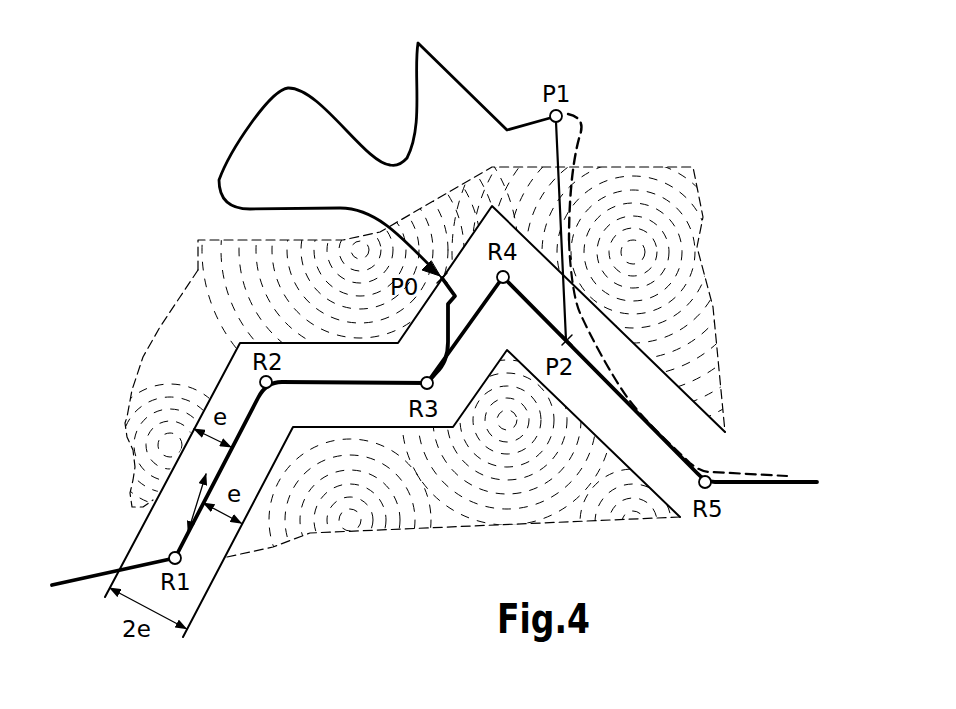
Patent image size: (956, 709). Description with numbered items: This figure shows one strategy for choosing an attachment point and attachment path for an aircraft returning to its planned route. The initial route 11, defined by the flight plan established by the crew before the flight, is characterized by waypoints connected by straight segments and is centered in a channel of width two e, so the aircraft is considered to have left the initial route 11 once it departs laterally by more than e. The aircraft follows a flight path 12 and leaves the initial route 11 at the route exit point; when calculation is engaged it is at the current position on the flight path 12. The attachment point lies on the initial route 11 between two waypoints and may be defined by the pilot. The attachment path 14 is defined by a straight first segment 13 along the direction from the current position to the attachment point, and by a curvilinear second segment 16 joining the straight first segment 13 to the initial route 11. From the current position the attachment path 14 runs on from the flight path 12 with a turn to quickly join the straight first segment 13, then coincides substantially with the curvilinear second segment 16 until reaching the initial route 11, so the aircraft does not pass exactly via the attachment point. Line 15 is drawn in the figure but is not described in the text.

The initial route 11 is at (243, 433).
The flight path 12 is at (328, 207).
The straight first segment 13 is at (556, 148).
The attachment path 14 is at (580, 140).
The bent profile line 15 is at (675, 437).
The curvilinear second segment 16 is at (585, 323).